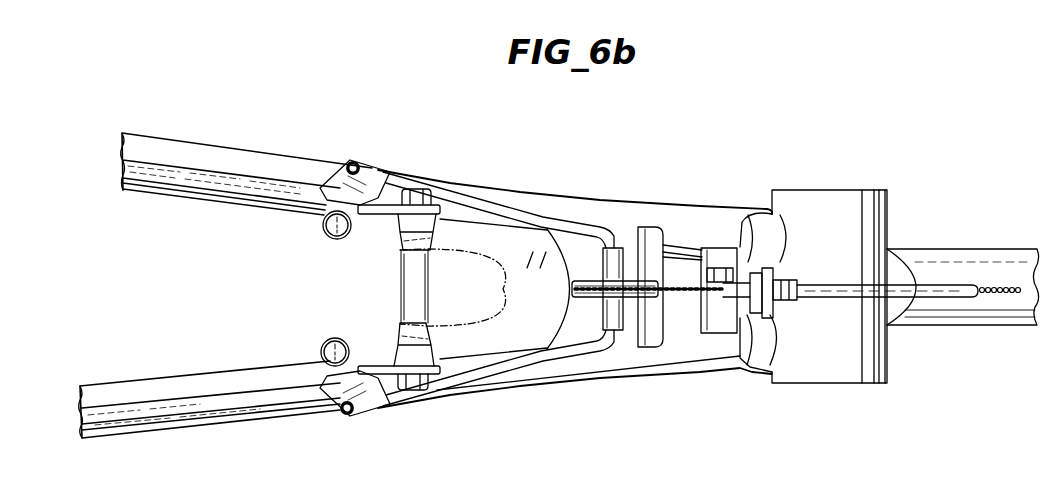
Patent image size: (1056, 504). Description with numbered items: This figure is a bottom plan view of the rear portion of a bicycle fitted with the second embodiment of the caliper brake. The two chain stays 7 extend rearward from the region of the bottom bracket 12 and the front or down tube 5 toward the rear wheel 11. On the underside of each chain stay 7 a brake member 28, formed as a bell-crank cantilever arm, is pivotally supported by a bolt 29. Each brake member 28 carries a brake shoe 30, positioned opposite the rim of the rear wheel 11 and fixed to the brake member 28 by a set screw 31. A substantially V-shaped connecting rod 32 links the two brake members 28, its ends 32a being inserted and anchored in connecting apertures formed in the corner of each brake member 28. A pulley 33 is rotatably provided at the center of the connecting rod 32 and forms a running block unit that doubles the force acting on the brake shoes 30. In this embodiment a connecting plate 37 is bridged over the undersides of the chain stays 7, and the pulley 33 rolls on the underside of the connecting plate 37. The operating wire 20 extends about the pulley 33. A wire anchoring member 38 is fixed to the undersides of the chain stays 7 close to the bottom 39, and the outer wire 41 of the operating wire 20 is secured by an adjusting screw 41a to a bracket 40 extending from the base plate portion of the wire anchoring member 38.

The front or down tube 5 is at (986, 252).
The chain stays 7 is at (195, 145).
The rear wheel 11 is at (500, 262).
The bottom bracket 12 is at (870, 200).
The operating wire 20 is at (997, 292).
The brake members 28 is at (320, 178).
The bolts 29 is at (326, 238).
The brake shoes 30 is at (398, 242).
The set screws 31 is at (425, 189).
The connecting rod 32 is at (490, 193).
The ends of connecting rod 32a is at (357, 162).
The pulley 33 is at (640, 312).
The connecting plate 37 is at (617, 350).
The wire anchoring member 38 is at (693, 267).
The bottom 39 is at (720, 262).
The bracket 40 is at (758, 344).
The outer wire 41 is at (942, 286).
The adjusting screw 41a is at (800, 272).